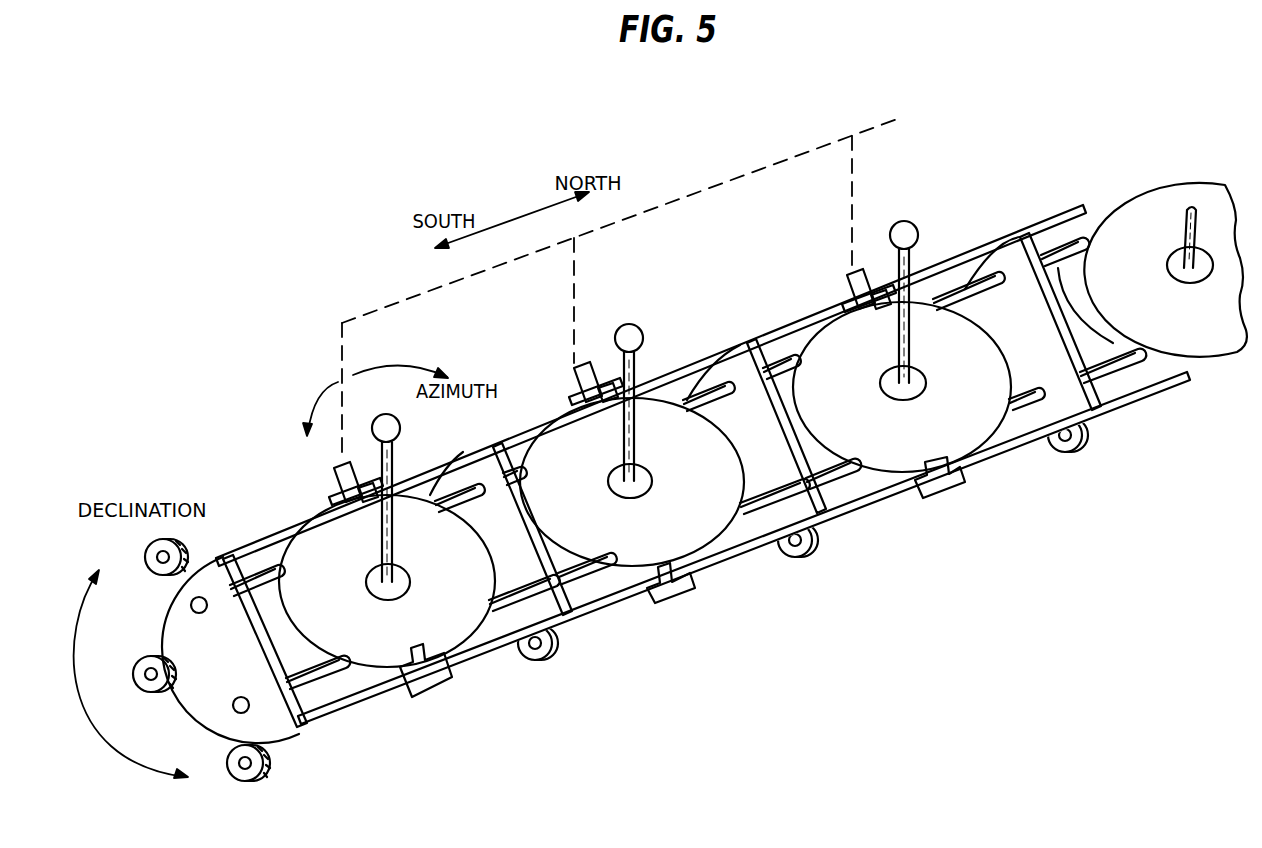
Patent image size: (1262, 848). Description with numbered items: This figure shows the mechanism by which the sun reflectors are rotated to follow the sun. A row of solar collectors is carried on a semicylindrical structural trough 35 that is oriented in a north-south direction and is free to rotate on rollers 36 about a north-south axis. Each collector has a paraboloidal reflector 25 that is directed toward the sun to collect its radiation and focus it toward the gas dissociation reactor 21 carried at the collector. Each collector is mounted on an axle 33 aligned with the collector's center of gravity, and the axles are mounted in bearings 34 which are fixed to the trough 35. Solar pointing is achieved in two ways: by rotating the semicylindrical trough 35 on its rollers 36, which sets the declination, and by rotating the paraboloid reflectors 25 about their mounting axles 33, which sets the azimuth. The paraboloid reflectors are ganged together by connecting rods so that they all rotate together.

The gas dissociation reactor 21 is at (643, 334).
The paraboloidal reflector 25 is at (697, 557).
The axle 33 is at (577, 373).
The bearing 34 is at (668, 604).
The semicylindrical structural trough 35 is at (357, 708).
The roller 36 is at (818, 553).